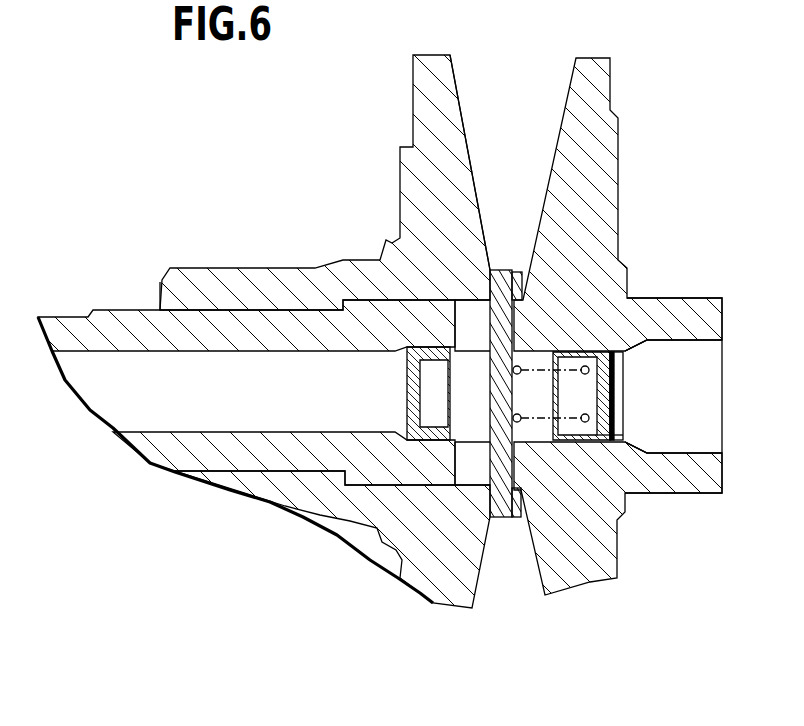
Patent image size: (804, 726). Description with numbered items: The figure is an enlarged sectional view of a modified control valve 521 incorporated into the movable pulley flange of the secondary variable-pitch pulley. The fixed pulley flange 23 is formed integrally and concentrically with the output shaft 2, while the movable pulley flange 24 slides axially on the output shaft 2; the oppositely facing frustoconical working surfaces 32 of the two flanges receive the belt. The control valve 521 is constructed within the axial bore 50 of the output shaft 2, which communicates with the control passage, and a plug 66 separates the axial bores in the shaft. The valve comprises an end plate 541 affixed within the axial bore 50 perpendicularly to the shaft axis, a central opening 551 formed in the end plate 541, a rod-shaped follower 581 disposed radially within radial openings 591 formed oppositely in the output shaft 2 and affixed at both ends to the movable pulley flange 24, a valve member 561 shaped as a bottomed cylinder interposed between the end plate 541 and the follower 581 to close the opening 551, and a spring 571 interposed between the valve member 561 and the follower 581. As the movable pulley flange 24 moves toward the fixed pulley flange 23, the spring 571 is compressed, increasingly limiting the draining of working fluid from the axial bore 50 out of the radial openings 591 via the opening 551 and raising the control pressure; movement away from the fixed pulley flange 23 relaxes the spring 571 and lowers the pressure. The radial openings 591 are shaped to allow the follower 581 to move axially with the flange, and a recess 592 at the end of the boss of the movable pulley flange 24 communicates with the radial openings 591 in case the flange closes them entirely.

The output shaft 2 is at (684, 307).
The fixed pulley flange 23 is at (590, 63).
The movable pulley flange 24 is at (418, 140).
The frustoconical working surfaces 32 is at (462, 112).
The axial bore 50 is at (690, 447).
The plug 66 is at (408, 375).
The control valve 521 is at (633, 410).
The end plate 541 is at (612, 428).
The central opening 551 is at (610, 390).
The valve member 561 is at (568, 358).
The spring 571 is at (538, 423).
The rod-shaped follower 581 is at (502, 273).
The radial openings 591 is at (468, 313).
The recess 592 is at (528, 298).